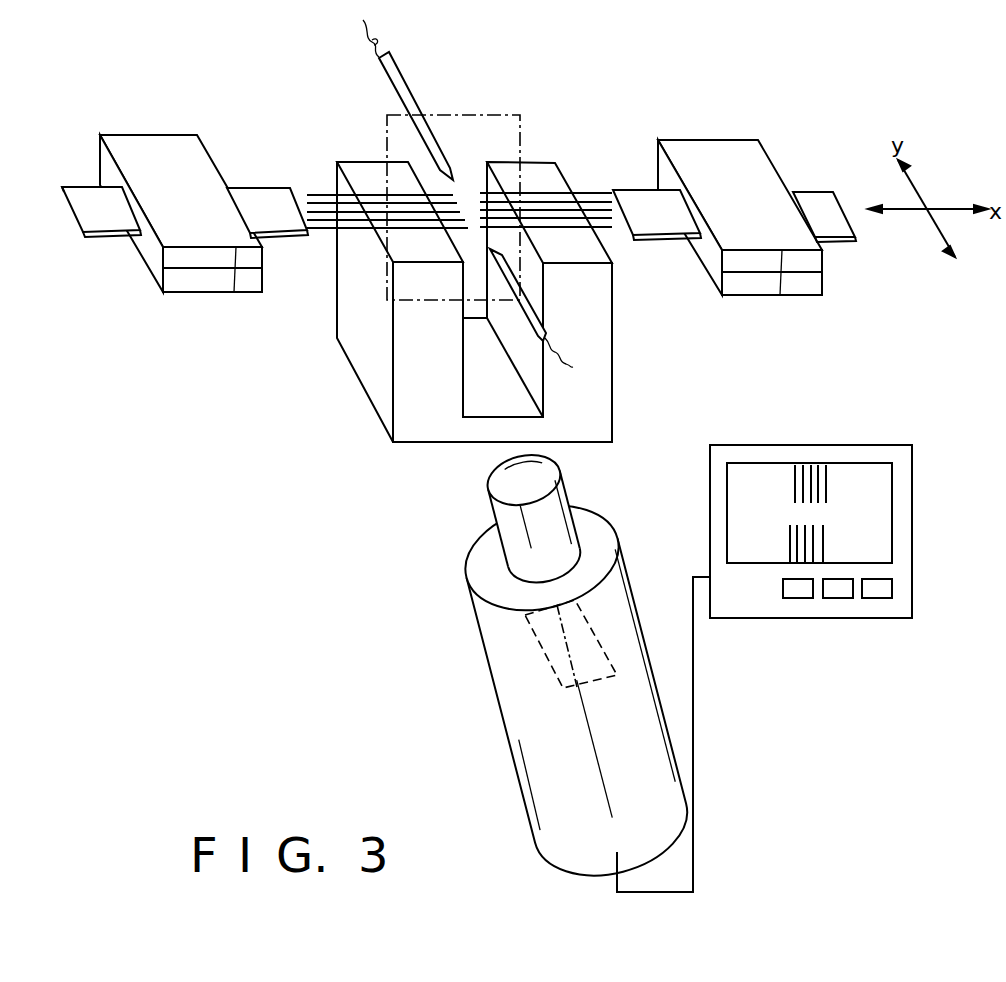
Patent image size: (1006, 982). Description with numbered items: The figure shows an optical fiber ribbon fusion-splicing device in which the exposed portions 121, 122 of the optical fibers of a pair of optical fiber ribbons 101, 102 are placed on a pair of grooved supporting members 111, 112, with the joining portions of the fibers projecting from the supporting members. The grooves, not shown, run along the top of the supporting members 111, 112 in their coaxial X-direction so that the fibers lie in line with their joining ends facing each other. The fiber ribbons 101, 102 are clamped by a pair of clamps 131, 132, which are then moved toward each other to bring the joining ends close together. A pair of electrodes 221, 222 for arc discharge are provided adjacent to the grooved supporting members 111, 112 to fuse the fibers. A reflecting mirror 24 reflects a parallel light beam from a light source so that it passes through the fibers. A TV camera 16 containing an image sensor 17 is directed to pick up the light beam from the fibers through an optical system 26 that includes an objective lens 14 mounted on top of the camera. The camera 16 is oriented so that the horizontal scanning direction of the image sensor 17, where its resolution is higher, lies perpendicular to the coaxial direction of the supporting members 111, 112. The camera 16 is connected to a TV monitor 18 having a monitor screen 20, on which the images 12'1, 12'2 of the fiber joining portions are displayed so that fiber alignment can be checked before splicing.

The clamp 131 is at (165, 142).
The clamp 132 is at (708, 150).
The optical fiber ribbon 101 is at (250, 192).
The optical fiber ribbon 102 is at (647, 192).
The exposed fiber portions 121 is at (313, 197).
The exposed fiber portions 122 is at (610, 197).
The grooved supporting member 111 is at (403, 243).
The grooved supporting member 112 is at (583, 240).
The electrode 221 is at (395, 75).
The electrode 222 is at (537, 320).
The reflecting mirror 24 is at (500, 115).
The objective lens 14 is at (490, 483).
The optical system 26 is at (478, 527).
The image sensor 17 is at (535, 635).
The TV camera 16 is at (503, 741).
The TV monitor 18 is at (912, 555).
The monitor screen 20 is at (853, 470).
The image of fibers 12'1 is at (789, 451).
The image of fibers 12'2 is at (776, 543).